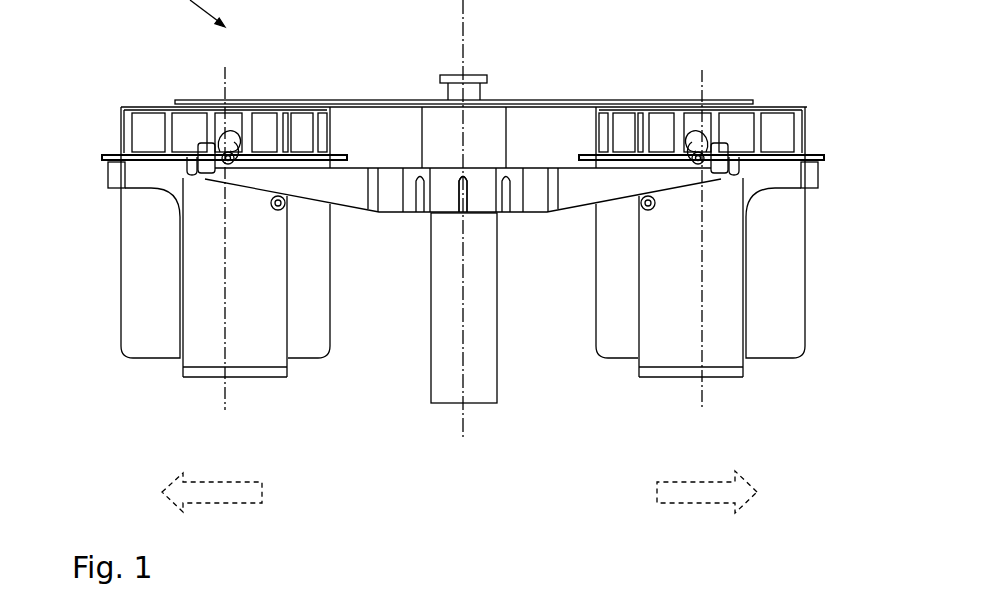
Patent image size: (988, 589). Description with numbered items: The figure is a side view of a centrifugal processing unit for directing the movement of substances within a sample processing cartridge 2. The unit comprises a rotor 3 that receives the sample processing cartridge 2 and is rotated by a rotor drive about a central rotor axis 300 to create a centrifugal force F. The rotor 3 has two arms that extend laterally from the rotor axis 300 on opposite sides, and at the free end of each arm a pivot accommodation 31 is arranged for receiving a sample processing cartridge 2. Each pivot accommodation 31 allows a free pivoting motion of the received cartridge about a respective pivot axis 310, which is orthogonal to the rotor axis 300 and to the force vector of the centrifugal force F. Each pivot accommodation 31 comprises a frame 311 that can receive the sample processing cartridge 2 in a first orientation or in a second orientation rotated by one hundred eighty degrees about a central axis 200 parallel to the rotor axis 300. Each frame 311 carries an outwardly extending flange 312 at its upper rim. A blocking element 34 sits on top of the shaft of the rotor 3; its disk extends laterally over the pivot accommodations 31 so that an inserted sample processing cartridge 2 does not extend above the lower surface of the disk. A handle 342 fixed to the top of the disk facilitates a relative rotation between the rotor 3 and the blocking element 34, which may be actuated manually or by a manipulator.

The sample processing cartridge 2 is at (140, 268).
The rotor 3 is at (442, 353).
The pivot accommodation 31 is at (271, 80).
The blocking element 34 is at (380, 103).
The central axis 200 is at (226, 72).
The rotor axis 300 is at (468, 438).
The pivot axis 310 is at (690, 157).
The frame 311 is at (207, 348).
The flange 312 is at (105, 154).
The handle 342 is at (470, 83).
The centrifugal force F is at (250, 492).